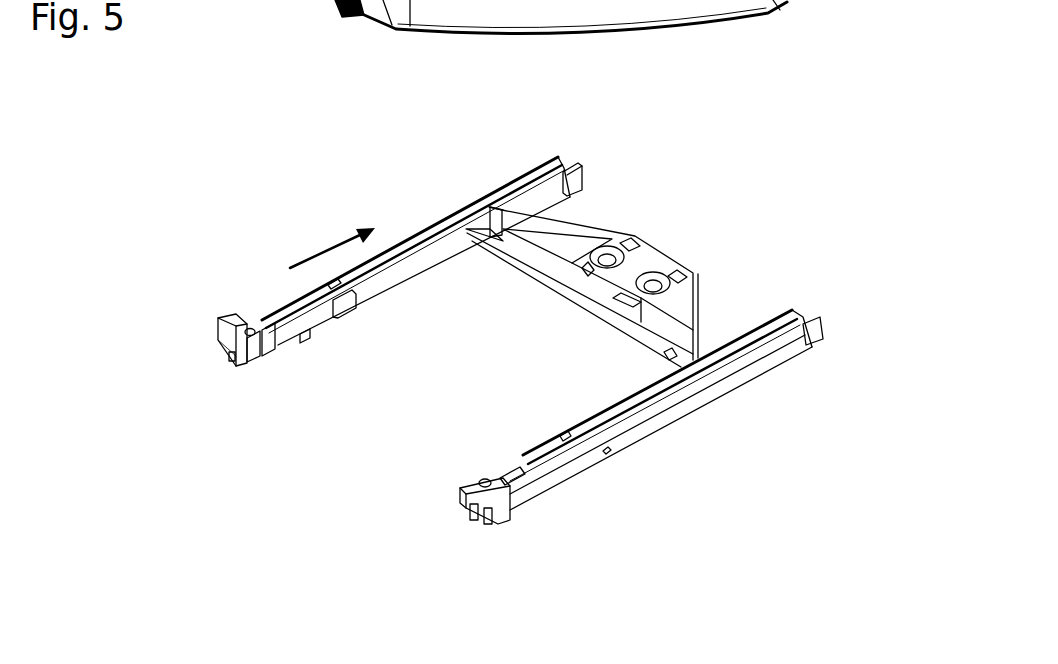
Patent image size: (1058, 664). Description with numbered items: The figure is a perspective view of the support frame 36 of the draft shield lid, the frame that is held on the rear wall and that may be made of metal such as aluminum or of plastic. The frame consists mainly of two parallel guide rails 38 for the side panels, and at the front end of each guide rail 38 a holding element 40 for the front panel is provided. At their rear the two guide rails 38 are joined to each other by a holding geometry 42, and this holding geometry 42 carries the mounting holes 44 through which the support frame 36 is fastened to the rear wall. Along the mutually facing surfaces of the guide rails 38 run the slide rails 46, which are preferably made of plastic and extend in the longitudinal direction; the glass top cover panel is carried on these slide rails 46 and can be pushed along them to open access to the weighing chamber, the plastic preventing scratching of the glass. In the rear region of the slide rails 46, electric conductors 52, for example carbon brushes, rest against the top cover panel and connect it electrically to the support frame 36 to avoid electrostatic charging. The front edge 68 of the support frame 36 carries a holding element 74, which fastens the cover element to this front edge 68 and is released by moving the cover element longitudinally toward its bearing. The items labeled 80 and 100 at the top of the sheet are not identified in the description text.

The support frame 36 is at (808, 155).
The guide rails 38 is at (431, 232).
The holding elements 40 is at (233, 325).
The holding geometry 42 is at (650, 260).
The mounting holes 44 is at (604, 262).
The slide rails 46 is at (353, 294).
The electric conductors 52 is at (463, 240).
The front edge of the support frame 68 is at (240, 380).
The holding element 74 is at (252, 335).
The drive 80 is at (297, 0).
The housing 100 is at (493, 16).